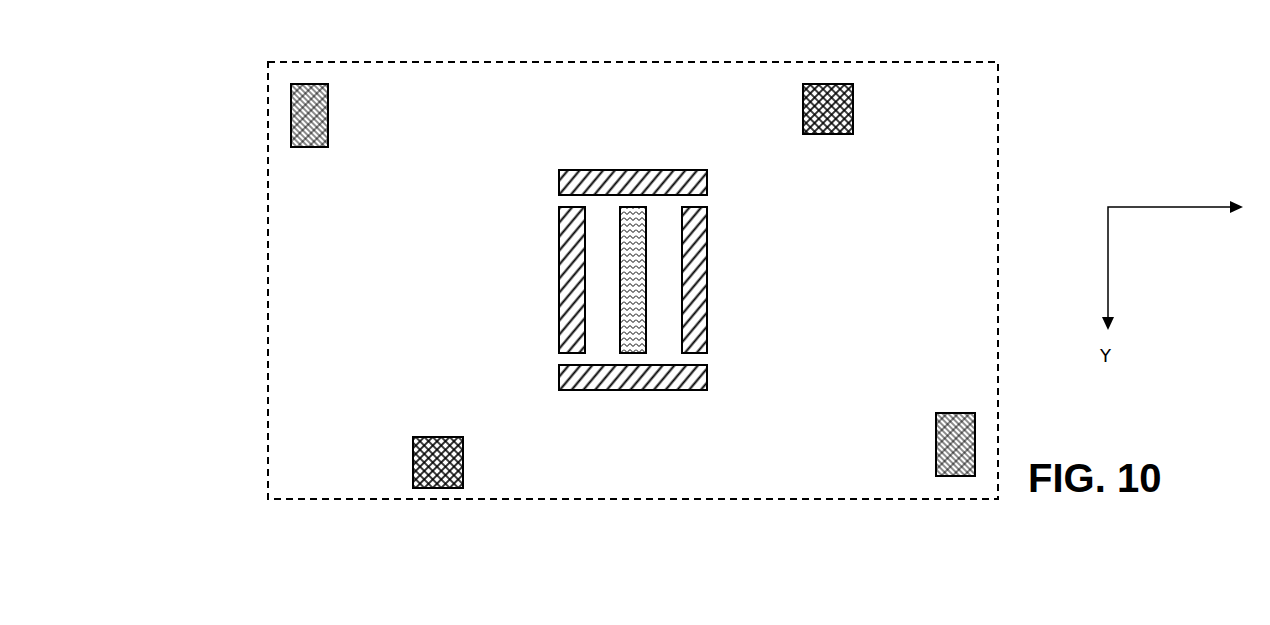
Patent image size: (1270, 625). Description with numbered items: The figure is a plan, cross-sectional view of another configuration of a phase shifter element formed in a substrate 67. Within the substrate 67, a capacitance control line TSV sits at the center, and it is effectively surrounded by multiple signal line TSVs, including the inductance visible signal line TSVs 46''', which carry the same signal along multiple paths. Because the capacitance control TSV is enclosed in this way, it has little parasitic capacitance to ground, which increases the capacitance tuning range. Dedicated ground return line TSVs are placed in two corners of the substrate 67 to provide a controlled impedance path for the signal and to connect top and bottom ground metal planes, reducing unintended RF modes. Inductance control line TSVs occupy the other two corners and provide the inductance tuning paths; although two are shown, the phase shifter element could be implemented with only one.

The substrate 67 is at (265, 300).
The signal line TSVs 46''' is at (636, 280).